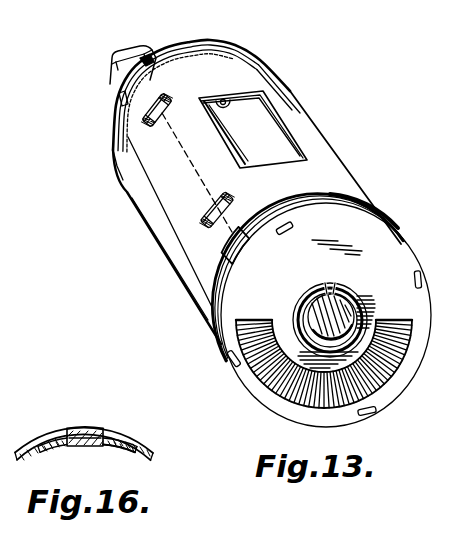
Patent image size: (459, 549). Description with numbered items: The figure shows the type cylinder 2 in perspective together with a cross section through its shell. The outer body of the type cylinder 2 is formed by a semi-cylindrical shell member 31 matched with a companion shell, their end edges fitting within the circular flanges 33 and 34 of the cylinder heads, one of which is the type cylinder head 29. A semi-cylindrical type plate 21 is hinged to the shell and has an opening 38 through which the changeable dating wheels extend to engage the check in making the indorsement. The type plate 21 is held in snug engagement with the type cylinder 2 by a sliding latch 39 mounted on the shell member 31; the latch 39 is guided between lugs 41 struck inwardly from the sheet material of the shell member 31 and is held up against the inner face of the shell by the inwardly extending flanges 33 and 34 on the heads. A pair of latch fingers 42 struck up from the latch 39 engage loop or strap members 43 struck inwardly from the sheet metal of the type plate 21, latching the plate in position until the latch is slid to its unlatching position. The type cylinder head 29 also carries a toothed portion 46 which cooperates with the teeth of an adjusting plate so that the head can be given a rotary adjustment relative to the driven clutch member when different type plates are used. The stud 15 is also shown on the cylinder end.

In FIG. 13, the type cylinder 2 is at (344, 151).
In FIG. 13, the pipe stud 15 is at (112, 28).
In FIG. 13, the semi-cylindrical type plate 21 is at (308, 138).
In FIG. 16, the semi-cylindrical type plate 21 is at (50, 441).
In FIG. 13, the type cylinder head 29 is at (397, 261).
In FIG. 16, the semi-cylindrical shell member 31 is at (153, 456).
In FIG. 13, the circular flange 33 is at (121, 101).
In FIG. 13, the circular flange 34 is at (368, 216).
In FIG. 13, the opening 38 is at (274, 110).
In FIG. 13, the latch 39 is at (147, 60).
In FIG. 16, the latch 39 is at (123, 446).
In FIG. 16, the lugs 41 is at (42, 450).
In FIG. 13, the latch fingers 42 is at (150, 115).
In FIG. 16, the latch fingers 42 is at (87, 438).
In FIG. 13, the loop or strap members 43 is at (152, 118).
In FIG. 16, the loop or strap members 43 is at (88, 444).
In FIG. 13, the toothed portion 46 is at (410, 352).